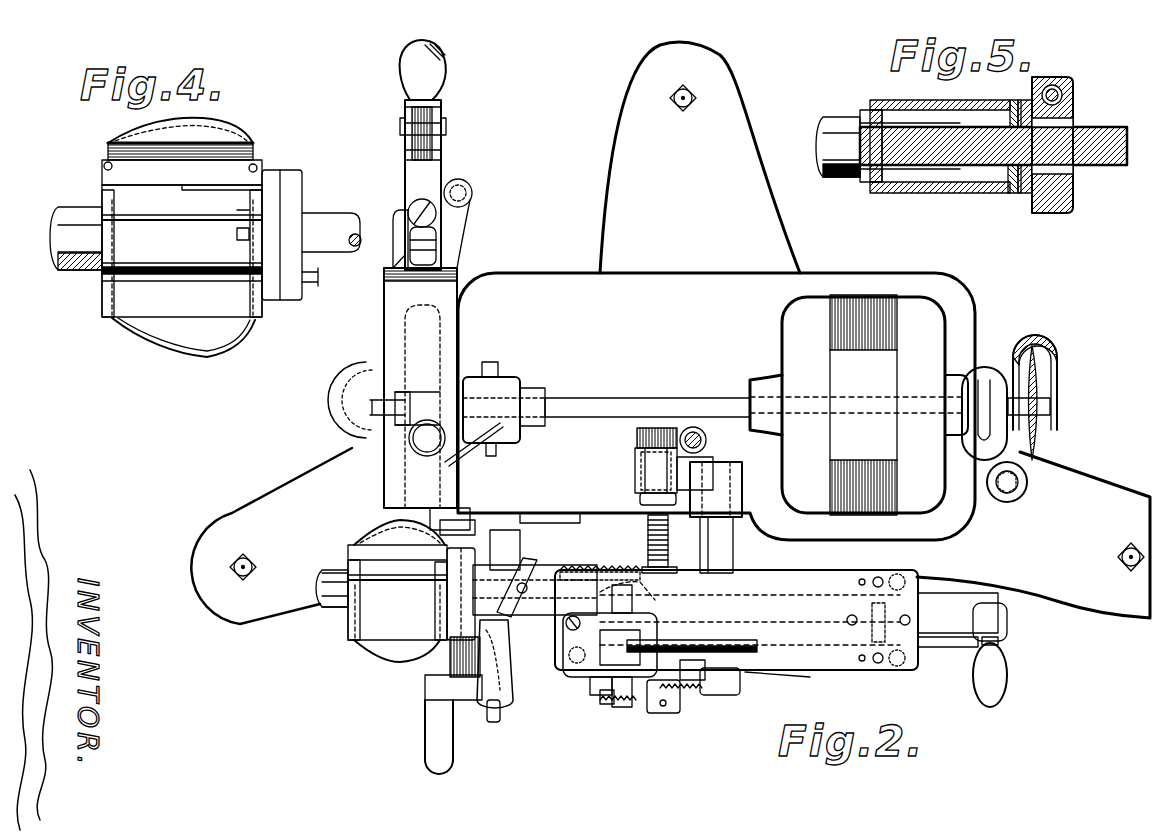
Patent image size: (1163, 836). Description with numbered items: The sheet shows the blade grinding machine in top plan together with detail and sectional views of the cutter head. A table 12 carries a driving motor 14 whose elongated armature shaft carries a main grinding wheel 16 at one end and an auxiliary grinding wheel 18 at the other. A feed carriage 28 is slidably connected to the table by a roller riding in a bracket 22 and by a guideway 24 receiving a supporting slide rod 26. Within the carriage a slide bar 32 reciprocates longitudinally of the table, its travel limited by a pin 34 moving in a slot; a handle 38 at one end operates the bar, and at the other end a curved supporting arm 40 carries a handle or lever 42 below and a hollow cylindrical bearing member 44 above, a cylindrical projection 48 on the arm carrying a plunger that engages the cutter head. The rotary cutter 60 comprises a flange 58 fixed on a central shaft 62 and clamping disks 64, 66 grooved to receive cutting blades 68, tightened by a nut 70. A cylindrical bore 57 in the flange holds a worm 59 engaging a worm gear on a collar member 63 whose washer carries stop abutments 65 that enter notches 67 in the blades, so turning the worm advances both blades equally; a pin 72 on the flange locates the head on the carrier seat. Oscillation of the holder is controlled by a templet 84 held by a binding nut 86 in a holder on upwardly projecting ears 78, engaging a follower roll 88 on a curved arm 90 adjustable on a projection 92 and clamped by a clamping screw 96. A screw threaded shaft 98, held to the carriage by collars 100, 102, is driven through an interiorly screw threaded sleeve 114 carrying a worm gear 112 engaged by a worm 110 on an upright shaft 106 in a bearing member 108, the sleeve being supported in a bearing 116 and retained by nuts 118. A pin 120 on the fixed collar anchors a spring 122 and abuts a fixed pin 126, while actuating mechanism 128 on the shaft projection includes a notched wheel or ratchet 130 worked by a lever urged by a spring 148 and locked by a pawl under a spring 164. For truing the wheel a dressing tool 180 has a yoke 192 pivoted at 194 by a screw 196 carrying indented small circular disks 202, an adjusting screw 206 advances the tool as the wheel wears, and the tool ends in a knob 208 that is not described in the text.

In FIG. 2, the table 12 is at (670, 333).
In FIG. 2, the driving motor 14 is at (859, 405).
In FIG. 2, the main grinding wheel 16 is at (415, 388).
In FIG. 2, the auxiliary grinding wheel 18 is at (1040, 443).
In FIG. 2, the bracket 22 is at (535, 541).
In FIG. 2, the guideway 24 is at (745, 623).
In FIG. 2, the supporting slide rod 26 is at (733, 536).
In FIG. 2, the feed carriage 28 is at (908, 620).
In FIG. 2, the slide bar 32 is at (527, 598).
In FIG. 2, the pin 34 is at (740, 687).
In FIG. 2, the handle 38 is at (990, 672).
In FIG. 2, the curved supporting arm 40 is at (514, 685).
In FIG. 2, the handle or lever 42 is at (439, 737).
In FIG. 2, the hollow cylindrical bearing member 44 is at (540, 567).
In FIG. 2, the cylindrical projection 48 is at (470, 661).
In FIG. 5, the cylindrical bore 57 is at (1074, 107).
In FIG. 4, the flange 58 is at (282, 235).
In FIG. 5, the flange 58 is at (1060, 77).
In FIG. 2, the flange 58 is at (461, 594).
In FIG. 5, the worm 59 is at (1064, 94).
In FIG. 2, the rotary cutter 60 is at (345, 618).
In FIG. 4, the central shaft 62 is at (331, 232).
In FIG. 5, the central shaft 62 is at (1094, 166).
In FIG. 5, the collar member 63 is at (1074, 121).
In FIG. 4, the clamping disk 64 is at (108, 280).
In FIG. 5, the clamping disk 64 is at (870, 110).
In FIG. 2, the clamping disk 64 is at (368, 600).
In FIG. 4, the stop abutments 65 is at (237, 232).
In FIG. 5, the stop abutments 65 is at (1014, 100).
In FIG. 4, the clamping disk 66 is at (262, 303).
In FIG. 5, the clamping disk 66 is at (1028, 99).
In FIG. 2, the clamping disk 66 is at (435, 606).
In FIG. 4, the notches 67 is at (243, 240).
In FIG. 5, the notches 67 is at (1021, 99).
In FIG. 4, the cutting blades 68 is at (182, 237).
In FIG. 5, the cutting blades 68 is at (918, 101).
In FIG. 2, the cutting blades 68 is at (397, 591).
In FIG. 4, the nut 70 is at (76, 238).
In FIG. 5, the nut 70 is at (838, 147).
In FIG. 2, the nut 70 is at (332, 591).
In FIG. 4, the pin 72 is at (317, 280).
In FIG. 2, the pin 72 is at (470, 548).
In FIG. 2, the upwardly projecting ears 78 is at (650, 637).
In FIG. 2, the templet 84 is at (760, 651).
In FIG. 2, the binding nut 86 is at (790, 676).
In FIG. 2, the follower roll 88 is at (597, 678).
In FIG. 2, the curved arm 90 is at (575, 666).
In FIG. 2, the projection 92 is at (655, 597).
In FIG. 2, the clamping screw 96 is at (608, 641).
In FIG. 2, the screw threaded shaft 98 is at (648, 536).
In FIG. 2, the collar 100 is at (672, 567).
In FIG. 2, the collar 102 is at (665, 716).
In FIG. 2, the upright shaft 106 is at (706, 447).
In FIG. 2, the bearing member 108 is at (713, 468).
In FIG. 2, the worm 110 is at (704, 435).
In FIG. 2, the worm gear 112 is at (637, 437).
In FIG. 2, the interiorly screw threaded sleeve 114 is at (637, 473).
In FIG. 2, the bearing 116 is at (637, 456).
In FIG. 2, the nuts 118 is at (640, 500).
In FIG. 2, the pin 120 is at (736, 620).
In FIG. 2, the spring 122 is at (620, 567).
In FIG. 2, the fixed pin 126 is at (645, 571).
In FIG. 2, the actuating mechanism 128 is at (610, 711).
In FIG. 2, the notched wheel or ratchet 130 is at (628, 708).
In FIG. 2, the spring 148 is at (690, 713).
In FIG. 2, the spring 164 is at (612, 693).
In FIG. 2, the dressing tool 180 is at (448, 143).
In FIG. 2, the yoke 192 is at (407, 179).
In FIG. 2, the pivot 194 is at (440, 236).
In FIG. 2, the screw 196 is at (410, 209).
In FIG. 2, the small circular disks 202 is at (432, 113).
In FIG. 2, the adjusting screw 206 is at (472, 190).
In FIG. 2, the knob 208 is at (445, 67).